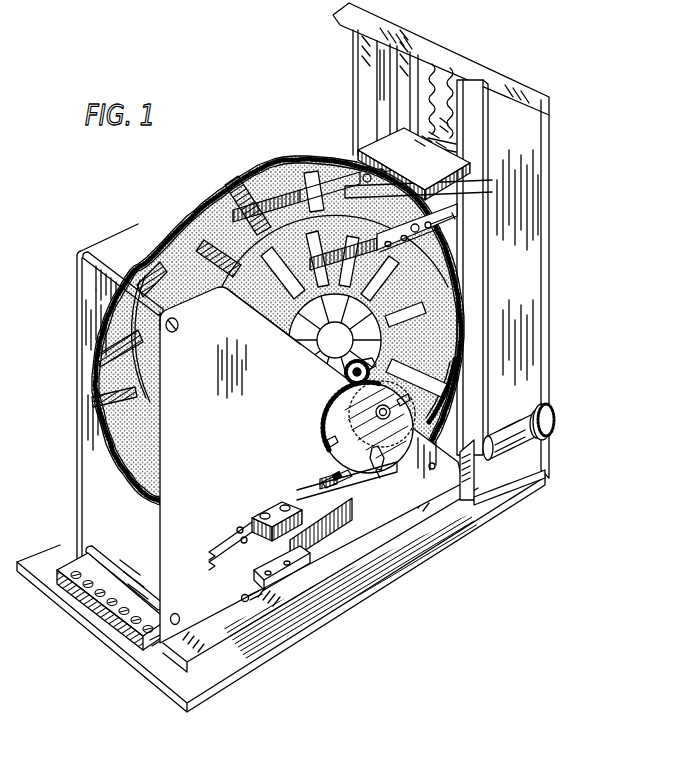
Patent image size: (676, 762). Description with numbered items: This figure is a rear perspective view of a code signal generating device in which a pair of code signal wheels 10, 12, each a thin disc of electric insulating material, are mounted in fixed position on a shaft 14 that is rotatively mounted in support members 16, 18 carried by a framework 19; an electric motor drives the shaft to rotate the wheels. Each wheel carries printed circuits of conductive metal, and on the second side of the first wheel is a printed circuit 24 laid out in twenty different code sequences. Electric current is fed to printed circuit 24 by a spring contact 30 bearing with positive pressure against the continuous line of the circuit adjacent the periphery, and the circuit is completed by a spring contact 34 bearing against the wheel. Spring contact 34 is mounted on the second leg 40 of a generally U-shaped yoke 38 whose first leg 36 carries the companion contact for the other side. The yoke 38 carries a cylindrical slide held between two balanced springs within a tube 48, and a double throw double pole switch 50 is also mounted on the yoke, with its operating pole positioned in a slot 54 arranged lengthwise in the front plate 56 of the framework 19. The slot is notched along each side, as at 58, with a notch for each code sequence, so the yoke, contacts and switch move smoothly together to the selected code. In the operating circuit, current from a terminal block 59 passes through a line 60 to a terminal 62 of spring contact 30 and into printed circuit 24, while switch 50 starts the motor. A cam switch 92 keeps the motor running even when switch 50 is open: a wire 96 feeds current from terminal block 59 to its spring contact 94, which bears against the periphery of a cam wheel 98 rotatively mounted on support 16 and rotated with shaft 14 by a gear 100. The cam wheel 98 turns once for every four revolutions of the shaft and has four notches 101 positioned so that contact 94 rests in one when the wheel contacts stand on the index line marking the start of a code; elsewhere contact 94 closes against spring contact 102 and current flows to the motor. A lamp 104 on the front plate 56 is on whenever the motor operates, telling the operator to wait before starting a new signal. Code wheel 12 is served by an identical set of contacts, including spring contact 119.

The code signal wheel 10 is at (250, 292).
The code signal wheel 12 is at (211, 194).
The shaft 14 is at (345, 373).
The support member 16 is at (250, 474).
The support member 18 is at (128, 531).
The framework 19 is at (468, 514).
The printed circuit 24 is at (275, 327).
The spring contact 30 is at (322, 535).
The spring contact 34 is at (361, 252).
The leg 36 is at (425, 185).
The yoke 38 is at (430, 258).
The leg 40 is at (406, 246).
The tube 48 is at (478, 155).
The double throw double pole switch 50 is at (362, 150).
The slot 54 is at (437, 73).
The front plate 56 is at (540, 170).
The notches 58 is at (448, 127).
The terminal block 59 is at (118, 634).
The line 60 is at (241, 597).
The terminal 62 is at (258, 580).
The cam switch 92 is at (314, 420).
The spring contact 94 is at (297, 506).
The wire 96 is at (226, 538).
The cam wheel 98 is at (325, 410).
The gear 100 is at (372, 362).
The notches 101 is at (398, 400).
The spring contact 102 is at (356, 461).
The lamp 104 is at (542, 430).
The spring contact 119 is at (238, 213).